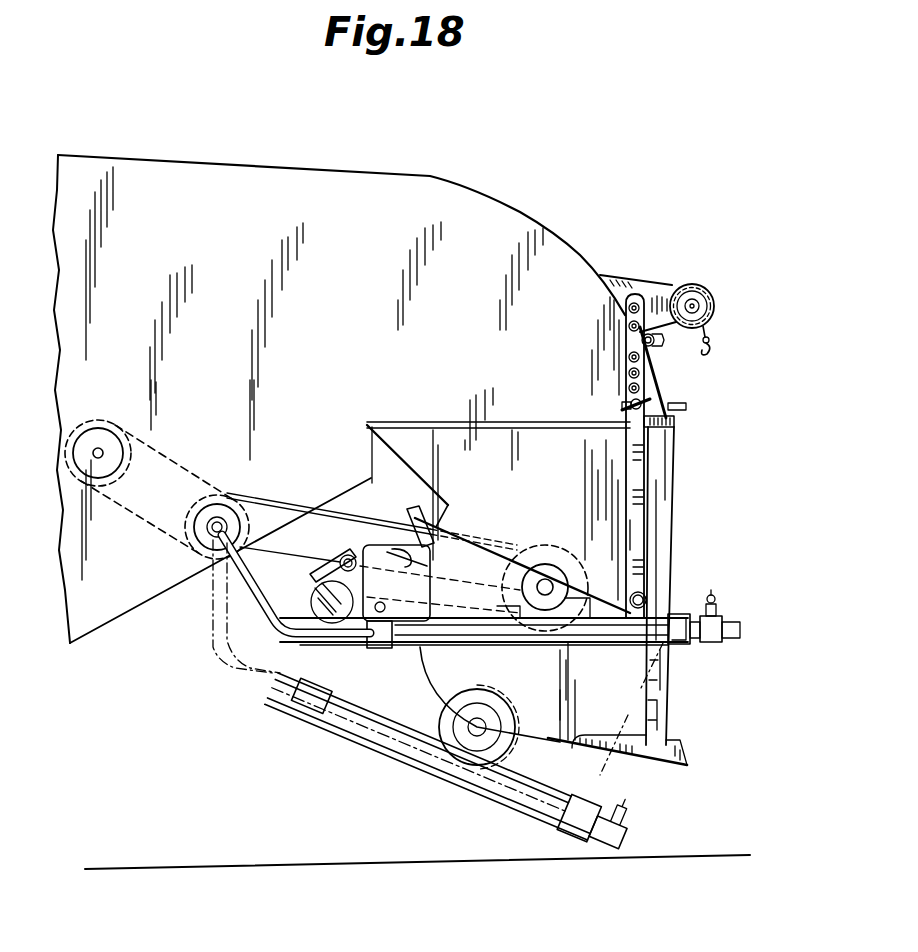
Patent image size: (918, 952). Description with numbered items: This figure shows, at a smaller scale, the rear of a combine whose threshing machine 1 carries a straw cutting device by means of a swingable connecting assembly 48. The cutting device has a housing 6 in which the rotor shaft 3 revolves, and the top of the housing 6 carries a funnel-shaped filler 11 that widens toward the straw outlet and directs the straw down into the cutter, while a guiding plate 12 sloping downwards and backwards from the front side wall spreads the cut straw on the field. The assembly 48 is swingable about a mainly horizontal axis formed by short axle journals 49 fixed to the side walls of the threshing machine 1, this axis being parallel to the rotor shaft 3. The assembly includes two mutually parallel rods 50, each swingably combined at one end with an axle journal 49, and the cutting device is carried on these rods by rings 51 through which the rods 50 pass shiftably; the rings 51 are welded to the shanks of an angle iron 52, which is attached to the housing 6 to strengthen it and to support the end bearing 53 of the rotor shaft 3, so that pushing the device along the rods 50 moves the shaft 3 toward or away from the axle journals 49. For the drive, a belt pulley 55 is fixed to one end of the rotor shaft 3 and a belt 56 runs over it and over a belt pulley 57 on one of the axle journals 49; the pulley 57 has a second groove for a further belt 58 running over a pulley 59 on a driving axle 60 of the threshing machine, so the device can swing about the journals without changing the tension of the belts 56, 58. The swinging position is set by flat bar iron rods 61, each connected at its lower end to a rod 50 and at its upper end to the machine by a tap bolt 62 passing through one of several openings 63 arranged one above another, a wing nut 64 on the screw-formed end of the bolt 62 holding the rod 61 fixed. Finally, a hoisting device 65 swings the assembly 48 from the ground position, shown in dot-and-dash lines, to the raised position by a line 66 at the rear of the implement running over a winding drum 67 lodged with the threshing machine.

The threshing machine 1 is at (339, 399).
The rotor shaft 3 is at (558, 582).
The housing 6 is at (675, 546).
The funnel-shaped filler 11 is at (418, 478).
The guiding plate 12 is at (622, 752).
The connecting assembly 48 is at (259, 633).
The axle journal 49 is at (237, 503).
The rod 50 is at (285, 690).
The ring 51 is at (683, 643).
The angle iron 52 is at (683, 616).
The end bearing 53 is at (548, 568).
The belt pulley 55 is at (513, 547).
The belt 56 is at (473, 557).
The belt pulley 57 is at (210, 495).
The belt 58 is at (160, 452).
The pulley 59 is at (101, 419).
The driving axle 60 is at (105, 457).
The rod 61 is at (645, 472).
The tap bolt 62 is at (628, 400).
The opening 63 is at (655, 348).
The wing nut 64 is at (620, 407).
The hoisting device 65 is at (694, 274).
The line 66 is at (716, 335).
The winding drum 67 is at (673, 282).